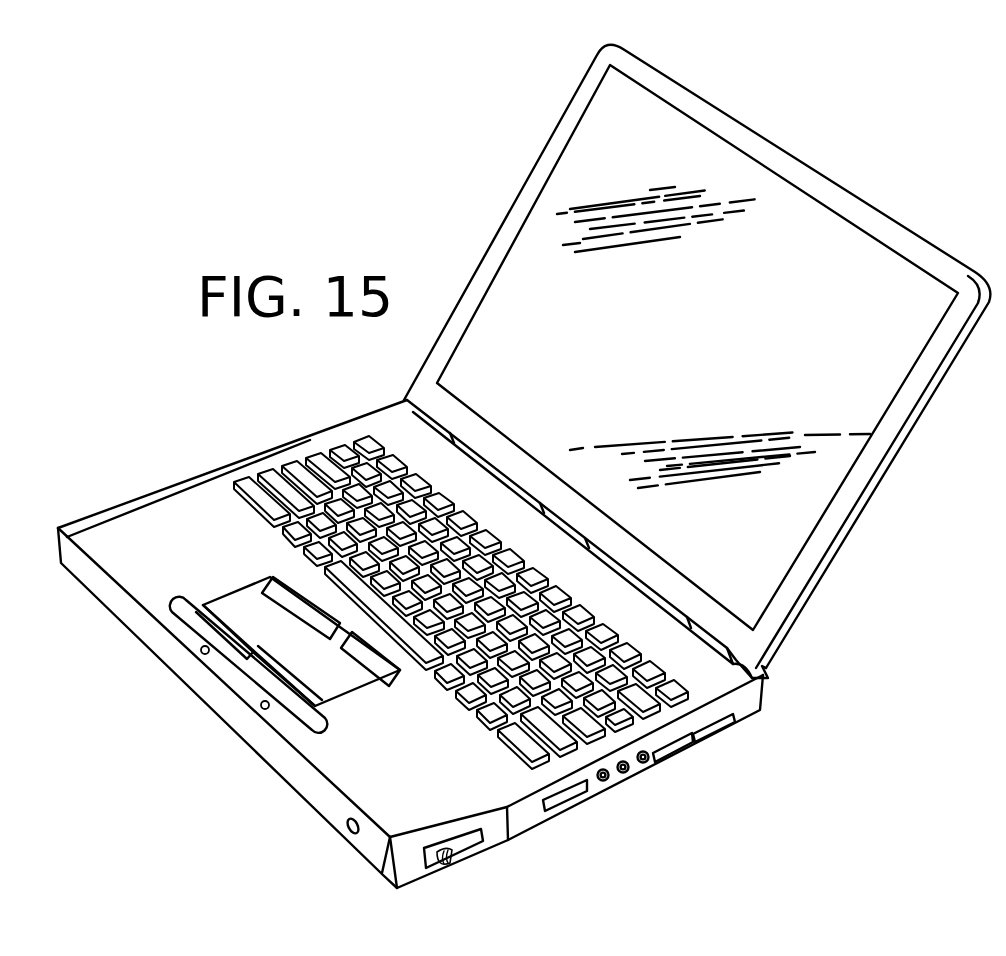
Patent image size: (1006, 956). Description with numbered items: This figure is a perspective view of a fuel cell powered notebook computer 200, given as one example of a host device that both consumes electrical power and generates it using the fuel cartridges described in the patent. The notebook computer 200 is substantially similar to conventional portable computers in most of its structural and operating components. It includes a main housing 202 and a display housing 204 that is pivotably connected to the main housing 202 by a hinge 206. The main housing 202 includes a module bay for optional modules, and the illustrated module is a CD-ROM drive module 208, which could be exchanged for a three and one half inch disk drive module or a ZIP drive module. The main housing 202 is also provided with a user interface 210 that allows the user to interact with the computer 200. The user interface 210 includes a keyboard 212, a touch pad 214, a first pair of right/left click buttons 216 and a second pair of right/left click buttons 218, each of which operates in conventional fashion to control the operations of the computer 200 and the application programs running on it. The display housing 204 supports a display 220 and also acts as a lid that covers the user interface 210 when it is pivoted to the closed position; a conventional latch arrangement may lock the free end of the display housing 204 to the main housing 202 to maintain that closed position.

The notebook computer 200 is at (277, 421).
The main housing 202 is at (163, 640).
The display housing 204 is at (540, 178).
The hinge 206 is at (733, 662).
The CD-ROM drive module 208 is at (333, 812).
The user interface 210 is at (173, 510).
The keyboard 212 is at (525, 779).
The touch pad 214 is at (240, 602).
The first pair of right/left click buttons 216 is at (287, 577).
The second pair of right/left click buttons 218 is at (302, 715).
The display 220 is at (712, 197).